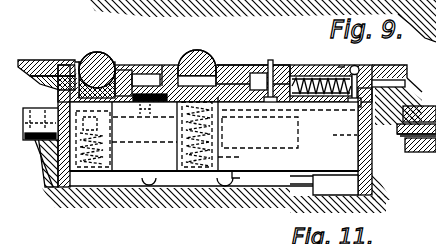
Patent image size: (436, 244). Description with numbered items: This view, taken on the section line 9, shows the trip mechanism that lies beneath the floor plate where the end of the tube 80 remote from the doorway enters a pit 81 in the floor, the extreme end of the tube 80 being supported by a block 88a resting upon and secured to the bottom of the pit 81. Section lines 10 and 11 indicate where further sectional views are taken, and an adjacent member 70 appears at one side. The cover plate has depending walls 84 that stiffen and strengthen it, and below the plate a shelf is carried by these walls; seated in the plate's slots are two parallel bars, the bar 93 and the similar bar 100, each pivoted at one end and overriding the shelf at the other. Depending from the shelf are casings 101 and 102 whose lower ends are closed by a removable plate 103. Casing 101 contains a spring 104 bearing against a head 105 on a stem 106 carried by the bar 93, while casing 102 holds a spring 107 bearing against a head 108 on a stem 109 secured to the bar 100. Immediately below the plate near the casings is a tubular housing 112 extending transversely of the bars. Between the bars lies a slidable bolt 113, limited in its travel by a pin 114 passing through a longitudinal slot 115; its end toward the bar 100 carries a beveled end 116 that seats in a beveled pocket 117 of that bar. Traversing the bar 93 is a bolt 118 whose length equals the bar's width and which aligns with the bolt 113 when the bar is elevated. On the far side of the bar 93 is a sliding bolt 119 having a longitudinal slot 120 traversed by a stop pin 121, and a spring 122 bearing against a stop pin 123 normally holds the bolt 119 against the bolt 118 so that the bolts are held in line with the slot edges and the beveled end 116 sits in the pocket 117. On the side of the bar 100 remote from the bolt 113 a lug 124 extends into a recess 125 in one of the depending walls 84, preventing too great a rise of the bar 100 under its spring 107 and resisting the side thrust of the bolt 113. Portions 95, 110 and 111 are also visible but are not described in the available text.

The section line 9— 9 is at (257, 40).
The section line 10— 10 is at (154, 9).
The section line 11— 11 is at (360, 136).
The guide member 70 is at (428, 154).
The tube 80 is at (405, 89).
The pit 81 is at (324, 185).
The depending walls 84 is at (70, 200).
The block 88a is at (268, 187).
The bar 93 is at (200, 51).
The pin 95 is at (178, 103).
The bar 100 is at (103, 51).
The casing 101 is at (177, 160).
The casing 102 is at (113, 173).
The removable plate 103 is at (184, 38).
The spring 104 is at (222, 157).
The head 105 is at (222, 140).
The stem 106 is at (213, 114).
The spring 107 is at (108, 153).
The head 108 is at (108, 133).
The stem 109 is at (102, 103).
The rim 110 is at (210, 55).
The ball seat 111 is at (98, 53).
The tubular housing 112 is at (321, 62).
The slidable bolt 113 is at (186, 67).
The pin 114 is at (152, 73).
The longitudinal slot 115 is at (158, 58).
The beveled end 116 is at (125, 83).
The beveled pocket 117 is at (76, 63).
The bolt 118 is at (227, 57).
The sliding bolt 119 is at (303, 76).
The longitudinal slot 120 is at (258, 68).
The stop pin 121 is at (292, 66).
The spring 122 is at (342, 68).
The stop pin 123 is at (358, 70).
The lug 124 is at (60, 87).
The recess 125 is at (58, 160).